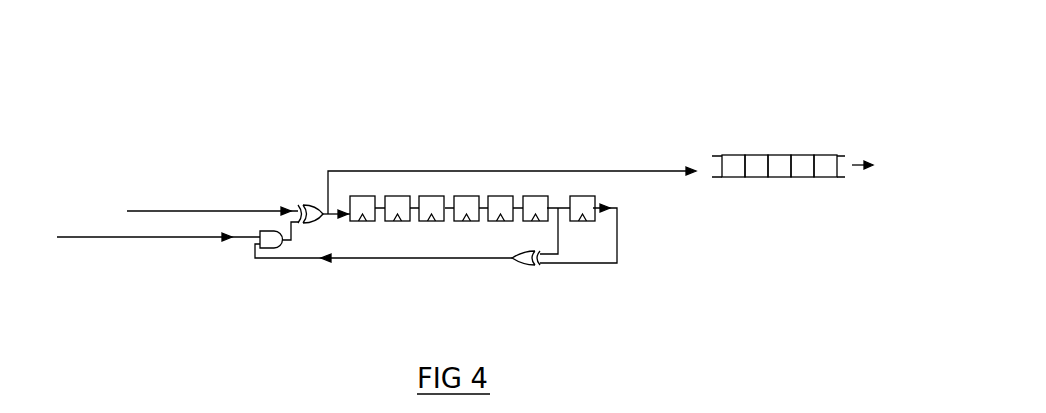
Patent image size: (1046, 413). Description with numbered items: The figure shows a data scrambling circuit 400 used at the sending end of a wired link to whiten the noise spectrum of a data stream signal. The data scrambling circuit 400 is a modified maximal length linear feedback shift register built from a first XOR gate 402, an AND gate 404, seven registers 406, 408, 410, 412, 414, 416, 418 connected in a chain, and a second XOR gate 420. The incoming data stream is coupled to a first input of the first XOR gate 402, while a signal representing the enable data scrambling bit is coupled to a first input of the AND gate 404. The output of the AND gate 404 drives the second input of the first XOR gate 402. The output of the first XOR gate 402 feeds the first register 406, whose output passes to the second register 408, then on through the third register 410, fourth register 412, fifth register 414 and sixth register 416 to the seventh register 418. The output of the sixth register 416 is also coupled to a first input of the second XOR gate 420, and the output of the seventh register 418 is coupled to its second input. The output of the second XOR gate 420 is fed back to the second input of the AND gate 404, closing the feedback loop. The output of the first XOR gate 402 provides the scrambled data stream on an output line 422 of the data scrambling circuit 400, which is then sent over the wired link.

The data scrambling circuit 400 is at (230, 150).
The first XOR gate 402 is at (303, 205).
The AND gate 404 is at (259, 248).
The first register 406 is at (353, 197).
The second register 408 is at (395, 196).
The third register 410 is at (429, 196).
The fourth register 412 is at (464, 196).
The fifth register 414 is at (498, 196).
The sixth register 416 is at (533, 196).
The seventh register 418 is at (580, 197).
The second XOR gate 420 is at (526, 265).
The output line 422 is at (475, 171).